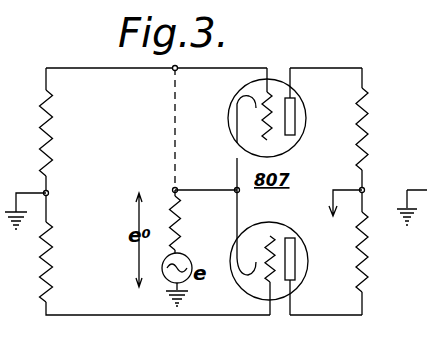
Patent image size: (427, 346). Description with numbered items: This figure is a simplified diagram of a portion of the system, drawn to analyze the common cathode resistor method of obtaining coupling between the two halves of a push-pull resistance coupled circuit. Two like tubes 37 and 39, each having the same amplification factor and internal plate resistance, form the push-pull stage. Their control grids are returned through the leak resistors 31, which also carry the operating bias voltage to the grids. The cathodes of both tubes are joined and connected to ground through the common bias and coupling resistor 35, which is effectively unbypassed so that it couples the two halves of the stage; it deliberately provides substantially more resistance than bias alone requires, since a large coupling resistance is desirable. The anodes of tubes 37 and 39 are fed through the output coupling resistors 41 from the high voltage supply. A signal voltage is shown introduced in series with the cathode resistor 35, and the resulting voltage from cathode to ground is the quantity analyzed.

The leak resistors 31 is at (67, 196).
The bias and coupling resistor 35 is at (192, 221).
The push-pull amplifier tube 37 is at (274, 80).
The push-pull amplifier tube 39 is at (273, 222).
The output coupling resistors 41 is at (384, 190).